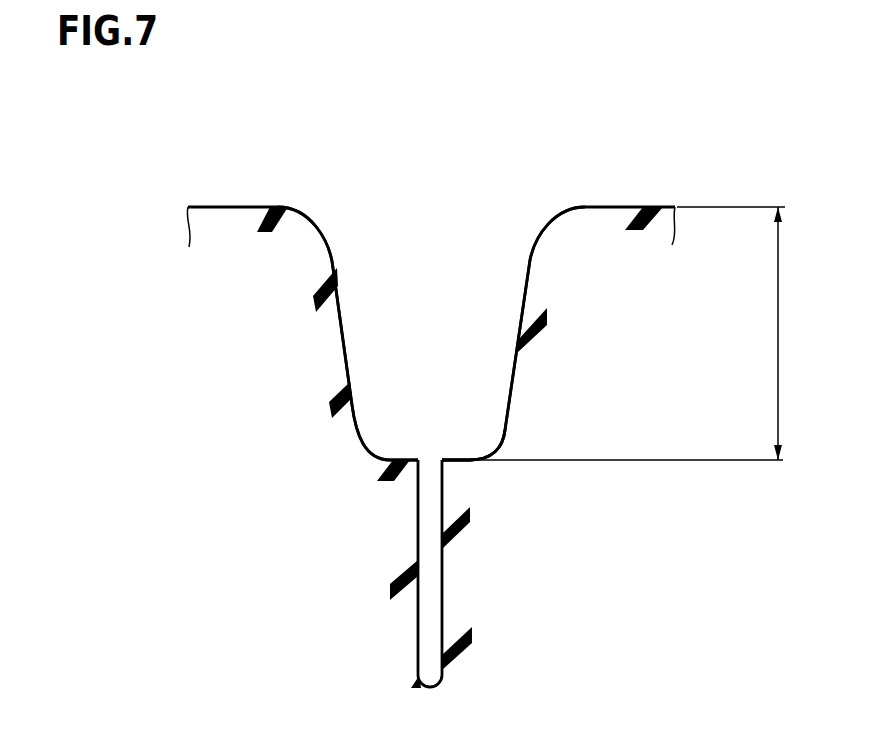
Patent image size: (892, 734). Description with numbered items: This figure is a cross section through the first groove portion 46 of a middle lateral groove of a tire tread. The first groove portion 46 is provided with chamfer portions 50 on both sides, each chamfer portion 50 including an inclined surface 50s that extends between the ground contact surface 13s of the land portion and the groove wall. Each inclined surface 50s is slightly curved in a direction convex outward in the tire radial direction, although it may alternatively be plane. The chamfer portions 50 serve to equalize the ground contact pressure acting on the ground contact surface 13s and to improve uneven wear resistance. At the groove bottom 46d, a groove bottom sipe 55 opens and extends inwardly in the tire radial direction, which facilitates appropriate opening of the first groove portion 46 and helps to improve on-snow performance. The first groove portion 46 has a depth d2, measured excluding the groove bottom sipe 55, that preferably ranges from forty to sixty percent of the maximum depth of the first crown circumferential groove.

The ground contact surface 13s is at (232, 207).
The chamfer portion 50 is at (320, 237).
The inclined surface 50s is at (313, 230).
The first groove portion 46 is at (422, 362).
The groove bottom 46d is at (462, 460).
The groove bottom sipe 55 is at (430, 597).
The depth d2 is at (645, 333).